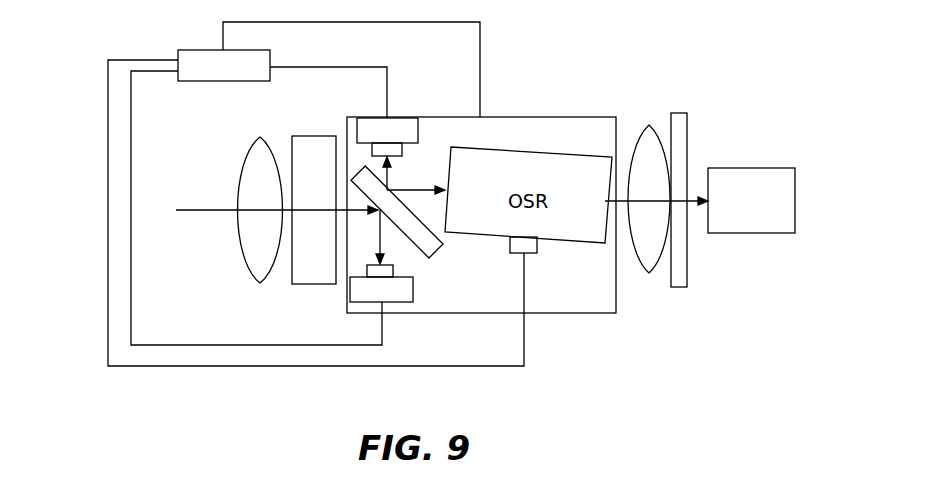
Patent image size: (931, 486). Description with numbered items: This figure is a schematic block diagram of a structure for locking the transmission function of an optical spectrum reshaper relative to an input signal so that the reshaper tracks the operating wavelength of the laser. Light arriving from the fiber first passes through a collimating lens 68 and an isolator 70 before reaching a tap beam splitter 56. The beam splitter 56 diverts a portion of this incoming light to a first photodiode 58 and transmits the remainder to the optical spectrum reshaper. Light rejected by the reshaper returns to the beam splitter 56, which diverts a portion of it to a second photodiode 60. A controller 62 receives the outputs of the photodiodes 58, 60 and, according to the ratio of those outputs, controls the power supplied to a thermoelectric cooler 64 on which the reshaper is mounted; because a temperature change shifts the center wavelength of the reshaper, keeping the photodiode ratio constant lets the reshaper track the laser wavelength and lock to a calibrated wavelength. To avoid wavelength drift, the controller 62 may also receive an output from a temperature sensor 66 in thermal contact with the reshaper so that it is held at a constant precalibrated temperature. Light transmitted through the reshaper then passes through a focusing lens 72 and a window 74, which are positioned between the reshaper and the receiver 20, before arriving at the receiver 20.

The receiver 20 is at (751, 200).
The beam splitter 56 is at (437, 250).
The first photodiode 58 is at (368, 293).
The second photodiode 60 is at (402, 125).
The controller 62 is at (224, 65).
The thermoelectric cooler (TEC) 64 is at (594, 300).
The temperature sensor 66 is at (530, 253).
The collimating lens 68 is at (261, 137).
The isolator 70 is at (317, 136).
The focusing lens 72 is at (650, 273).
The window 74 is at (679, 113).